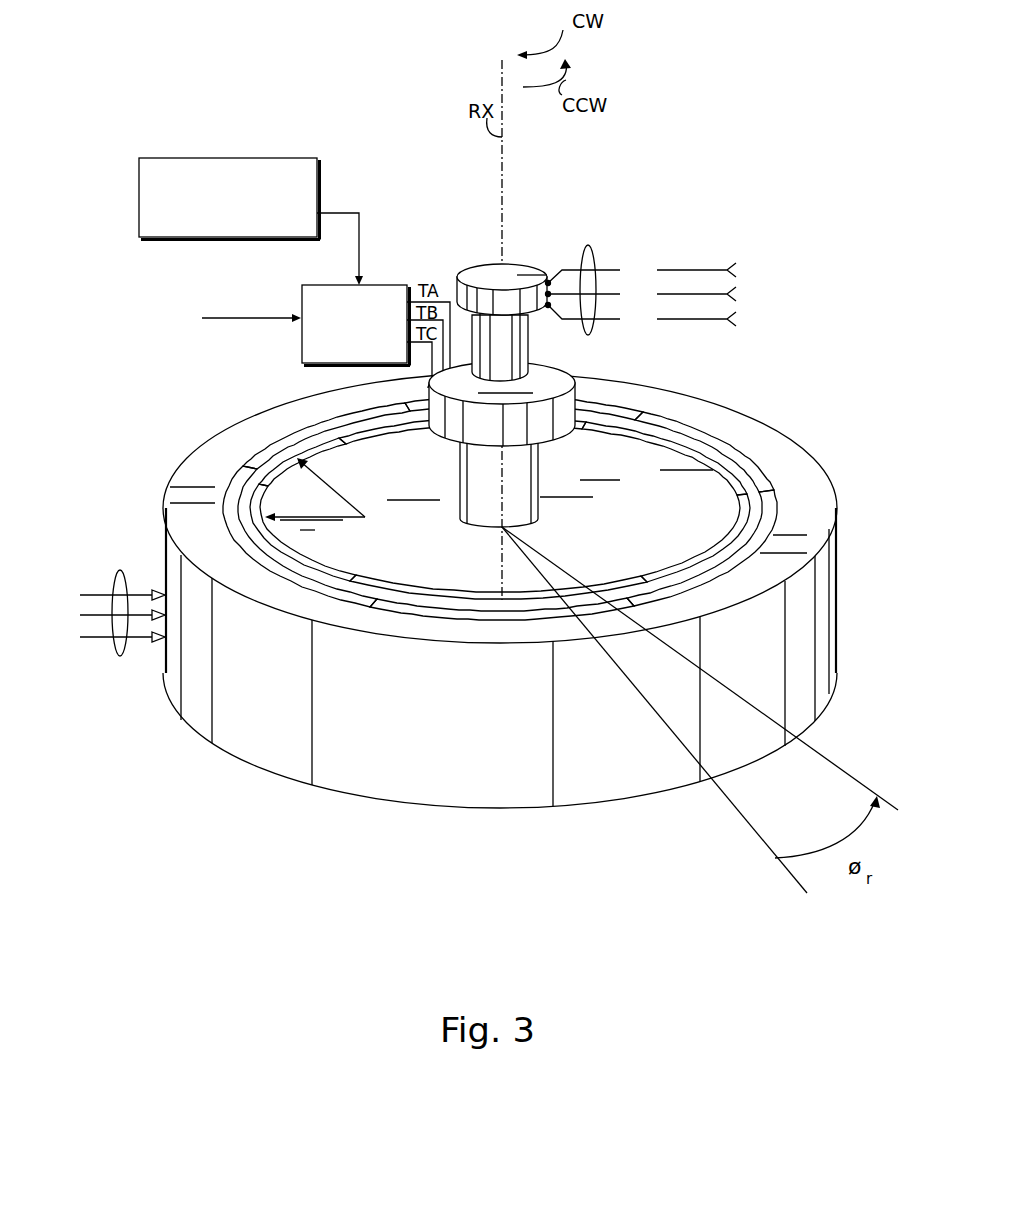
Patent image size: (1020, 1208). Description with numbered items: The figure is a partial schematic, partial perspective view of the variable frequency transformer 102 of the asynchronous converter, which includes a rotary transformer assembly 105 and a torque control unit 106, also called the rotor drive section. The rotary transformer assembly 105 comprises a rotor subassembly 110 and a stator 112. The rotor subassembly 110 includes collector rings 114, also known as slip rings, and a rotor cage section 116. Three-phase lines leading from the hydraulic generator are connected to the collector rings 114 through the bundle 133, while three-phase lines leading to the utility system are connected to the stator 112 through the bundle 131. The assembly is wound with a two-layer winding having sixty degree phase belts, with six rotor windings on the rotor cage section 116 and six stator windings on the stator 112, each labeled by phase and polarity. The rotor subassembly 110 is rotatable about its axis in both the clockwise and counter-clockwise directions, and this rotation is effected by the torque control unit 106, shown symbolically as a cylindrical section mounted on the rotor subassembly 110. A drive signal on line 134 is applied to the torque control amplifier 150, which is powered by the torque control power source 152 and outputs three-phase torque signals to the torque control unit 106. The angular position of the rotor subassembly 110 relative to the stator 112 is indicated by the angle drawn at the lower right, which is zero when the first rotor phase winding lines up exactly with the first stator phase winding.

The variable frequency transformer 102 is at (790, 400).
The rotary transformer assembly 105 is at (852, 442).
The torque control unit 106 is at (437, 436).
The rotor subassembly 110 is at (550, 459).
The stator 112 is at (838, 588).
The collector rings 114 is at (466, 259).
The rotor cage section 116 is at (580, 540).
The stator winding leads 131 is at (118, 644).
The rotor winding leads 133 is at (598, 246).
The line 134 is at (206, 318).
The torque control amplifier 150 is at (402, 284).
The torque control power source 152 is at (243, 168).